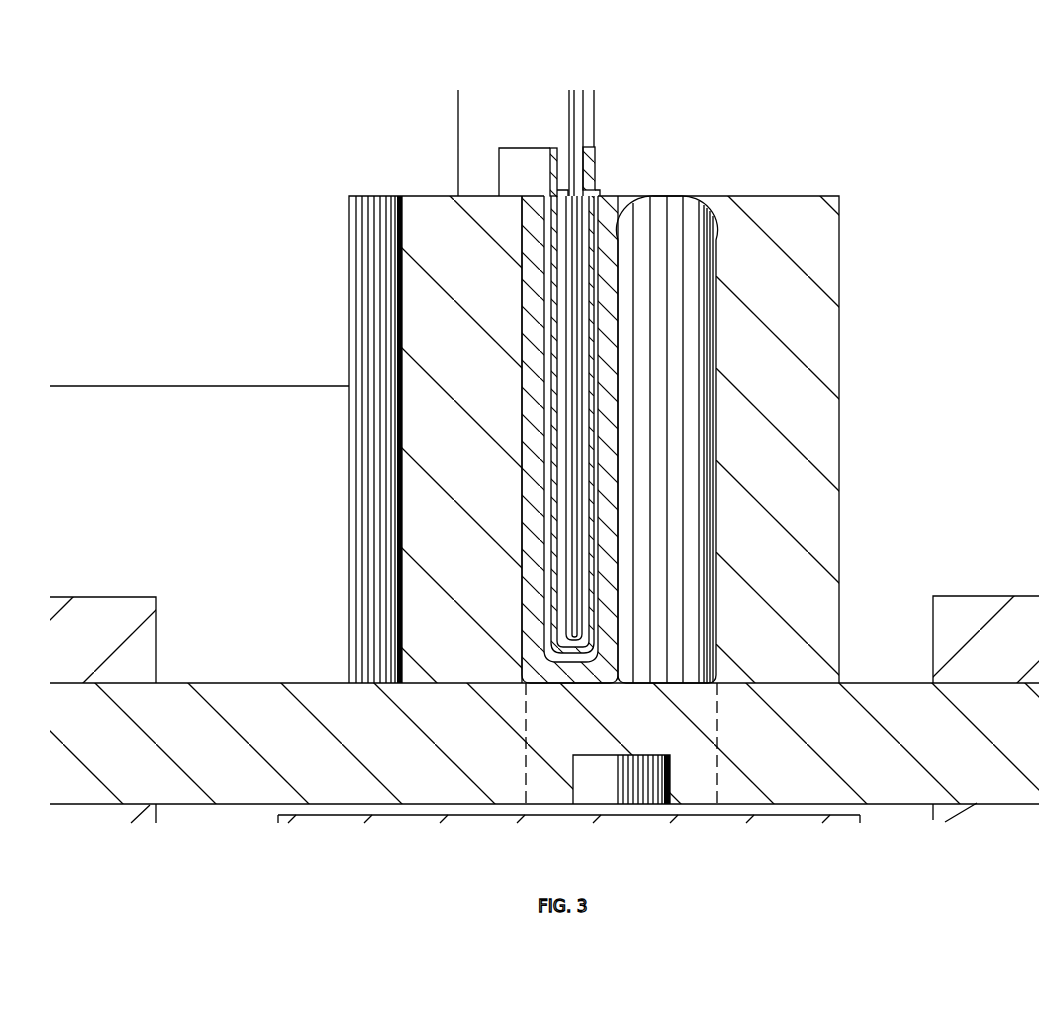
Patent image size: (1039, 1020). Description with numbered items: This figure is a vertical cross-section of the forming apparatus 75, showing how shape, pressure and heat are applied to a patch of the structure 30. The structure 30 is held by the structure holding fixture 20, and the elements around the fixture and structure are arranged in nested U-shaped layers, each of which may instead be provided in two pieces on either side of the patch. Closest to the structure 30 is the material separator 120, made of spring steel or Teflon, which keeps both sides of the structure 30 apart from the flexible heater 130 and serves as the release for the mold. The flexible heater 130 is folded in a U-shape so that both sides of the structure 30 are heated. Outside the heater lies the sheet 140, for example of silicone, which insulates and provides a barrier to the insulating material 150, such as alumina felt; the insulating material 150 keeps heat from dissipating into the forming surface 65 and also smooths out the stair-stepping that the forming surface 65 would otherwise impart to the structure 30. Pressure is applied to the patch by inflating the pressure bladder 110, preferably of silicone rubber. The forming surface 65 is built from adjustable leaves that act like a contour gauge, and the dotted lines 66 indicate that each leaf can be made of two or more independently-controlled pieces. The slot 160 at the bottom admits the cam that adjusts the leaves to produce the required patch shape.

The structure holding fixture 20 is at (573, 88).
The structure 30 is at (497, 111).
The forming surface 65 is at (393, 540).
The dotted lines 66 is at (717, 710).
The forming apparatus 75 is at (935, 138).
The pressure bladder 110 is at (672, 485).
The material separator 120 is at (577, 288).
The flexible heater 130 is at (590, 172).
The sheet 140 is at (545, 268).
The insulating material 150 is at (530, 312).
The slot 160 is at (605, 800).